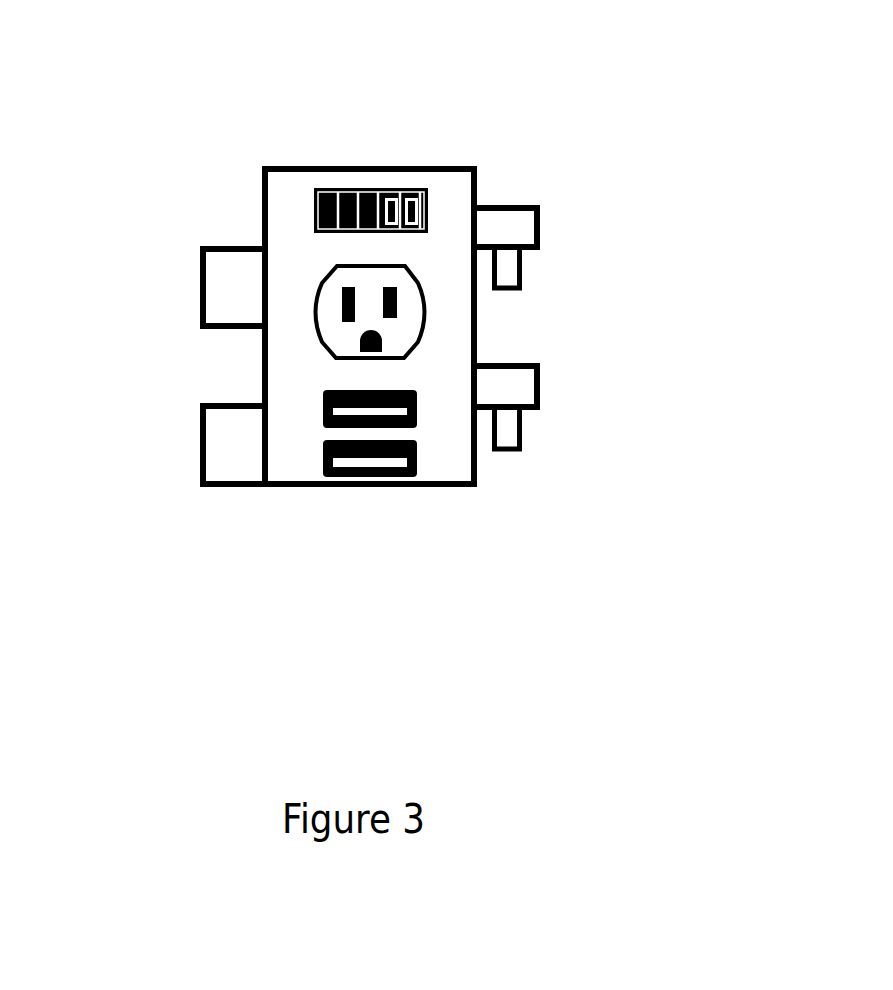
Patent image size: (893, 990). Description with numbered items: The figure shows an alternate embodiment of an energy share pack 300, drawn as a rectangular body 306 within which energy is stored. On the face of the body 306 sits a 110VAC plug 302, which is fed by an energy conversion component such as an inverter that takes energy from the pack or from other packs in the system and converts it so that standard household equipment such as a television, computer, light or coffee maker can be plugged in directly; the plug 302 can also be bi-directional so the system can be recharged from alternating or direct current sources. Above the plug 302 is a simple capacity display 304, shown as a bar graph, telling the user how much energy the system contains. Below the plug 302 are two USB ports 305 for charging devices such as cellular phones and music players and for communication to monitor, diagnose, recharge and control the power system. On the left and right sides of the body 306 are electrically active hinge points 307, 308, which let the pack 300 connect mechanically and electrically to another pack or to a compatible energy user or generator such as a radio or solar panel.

The energy share pack 300 is at (397, 313).
The 110VAC plug 302 is at (370, 312).
The capacity display 304 is at (308, 210).
The USB ports 305 is at (370, 480).
The body 306 is at (460, 460).
The electrically active hinge point 307 is at (193, 405).
The electrically active hinge point 308 is at (562, 223).